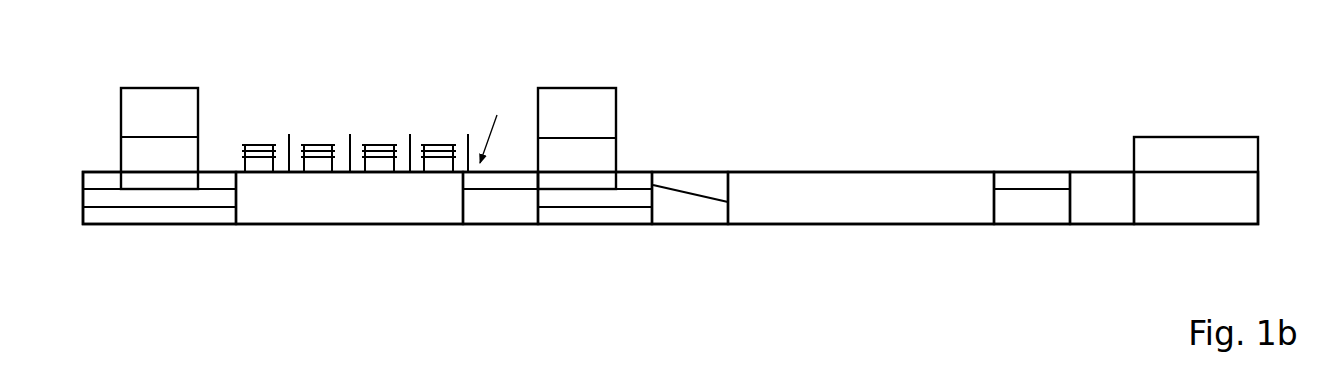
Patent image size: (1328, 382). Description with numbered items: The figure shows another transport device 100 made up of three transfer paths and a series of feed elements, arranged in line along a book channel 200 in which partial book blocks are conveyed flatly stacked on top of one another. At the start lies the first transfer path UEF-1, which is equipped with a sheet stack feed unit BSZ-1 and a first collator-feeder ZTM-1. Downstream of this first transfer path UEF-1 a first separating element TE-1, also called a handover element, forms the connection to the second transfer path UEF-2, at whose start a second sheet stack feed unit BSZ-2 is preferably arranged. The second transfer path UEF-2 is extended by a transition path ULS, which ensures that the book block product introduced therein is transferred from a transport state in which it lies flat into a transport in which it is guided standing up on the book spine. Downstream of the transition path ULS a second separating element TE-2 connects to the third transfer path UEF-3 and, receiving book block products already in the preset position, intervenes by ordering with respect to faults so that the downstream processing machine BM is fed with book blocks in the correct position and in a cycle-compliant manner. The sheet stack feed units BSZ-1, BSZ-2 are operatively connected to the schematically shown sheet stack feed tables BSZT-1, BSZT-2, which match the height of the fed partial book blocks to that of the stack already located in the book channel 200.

The transport device 100 is at (904, 128).
The book channel 200 is at (500, 124).
The sheet stack feed unit BSZ-1 is at (163, 117).
The second sheet stack feed unit BSZ-2 is at (578, 117).
The sheet stack feed table BSZT-1 is at (167, 224).
The sheet stack feed table BSZT-2 is at (593, 224).
The first collator-feeder ZTM-1 is at (362, 107).
The first transfer path UEF-1 is at (340, 212).
The second transfer path UEF-2 is at (857, 212).
The third transfer path UEF-3 is at (1105, 208).
The first separating element TE-1 is at (507, 212).
The second separating element TE-2 is at (1048, 208).
The transition path ULS is at (693, 178).
The processing machine BM is at (1164, 155).